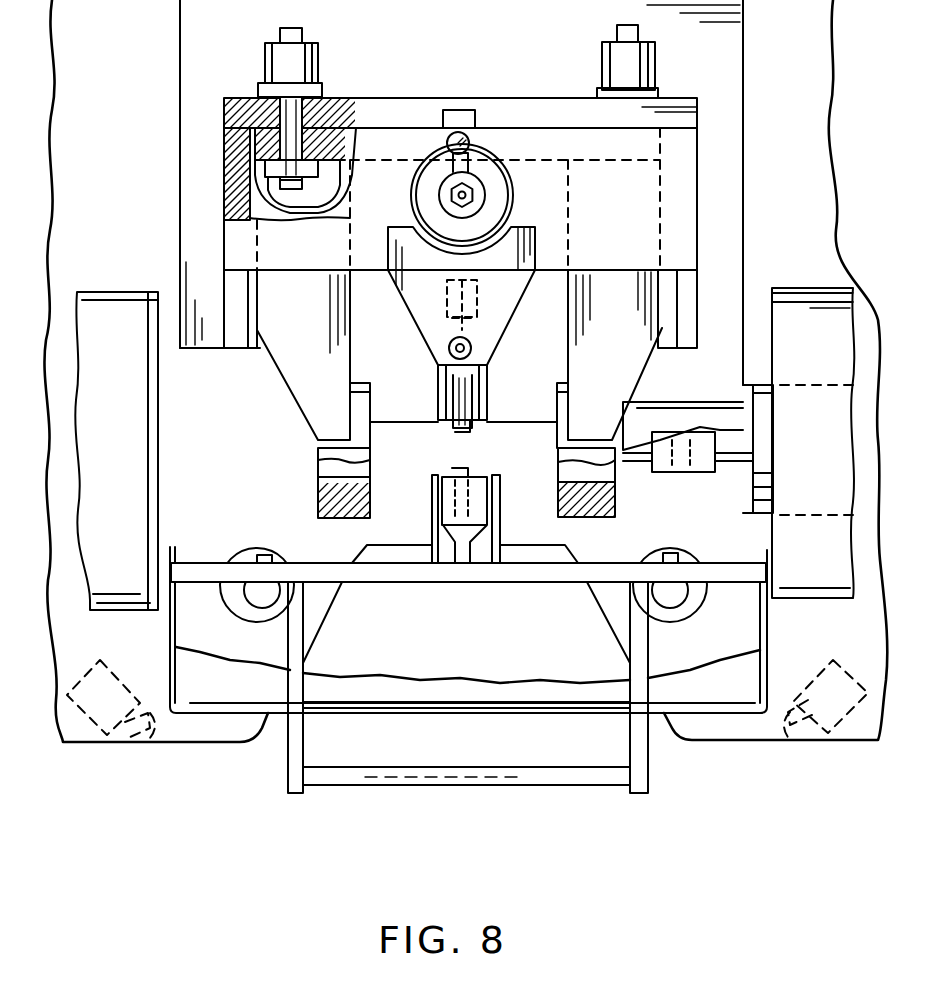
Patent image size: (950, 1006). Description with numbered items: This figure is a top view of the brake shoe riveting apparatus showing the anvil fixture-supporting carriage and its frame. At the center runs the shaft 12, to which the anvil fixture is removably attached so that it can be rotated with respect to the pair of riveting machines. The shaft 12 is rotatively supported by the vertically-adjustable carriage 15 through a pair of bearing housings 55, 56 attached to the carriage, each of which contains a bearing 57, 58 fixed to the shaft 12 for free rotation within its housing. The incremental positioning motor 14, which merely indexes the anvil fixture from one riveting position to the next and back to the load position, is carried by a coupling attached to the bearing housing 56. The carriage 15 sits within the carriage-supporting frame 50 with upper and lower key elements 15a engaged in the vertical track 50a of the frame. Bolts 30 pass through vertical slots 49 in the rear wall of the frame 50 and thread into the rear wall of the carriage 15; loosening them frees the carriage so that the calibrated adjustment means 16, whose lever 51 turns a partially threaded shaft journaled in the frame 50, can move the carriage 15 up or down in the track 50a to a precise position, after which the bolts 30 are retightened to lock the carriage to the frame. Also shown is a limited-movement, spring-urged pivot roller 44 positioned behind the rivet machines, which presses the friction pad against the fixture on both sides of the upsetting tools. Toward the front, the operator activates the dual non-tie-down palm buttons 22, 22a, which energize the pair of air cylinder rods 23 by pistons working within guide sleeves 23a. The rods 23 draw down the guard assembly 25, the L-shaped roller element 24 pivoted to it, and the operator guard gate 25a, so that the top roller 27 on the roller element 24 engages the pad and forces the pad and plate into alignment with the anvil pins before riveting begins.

The shaft 12 is at (532, 430).
The incremental positioning motor 14 is at (763, 393).
The vertically-adjustable carriage 15 is at (302, 374).
The key elements 15a is at (453, 110).
The adjustment means 16 is at (540, 205).
The palm button 22 is at (127, 748).
The palm button 22a is at (770, 745).
The air cylinder rods 23 is at (253, 595).
The guide sleeves 23a is at (242, 552).
The roller element 24 is at (500, 492).
The guard assembly 25 is at (330, 568).
The operator guard gate 25a is at (437, 708).
The top roller 27 is at (455, 475).
The bolts 30 is at (262, 52).
The spring-urged pivot roller 44 is at (463, 395).
The vertical slots 49 is at (313, 110).
The carriage-supporting frame 50 is at (410, 100).
The vertical track 50a is at (455, 118).
The lever 51 is at (447, 142).
The bearing housing 55 is at (357, 387).
The bearing housing 56 is at (557, 387).
The bearing 57 is at (315, 475).
The bearing 58 is at (617, 470).